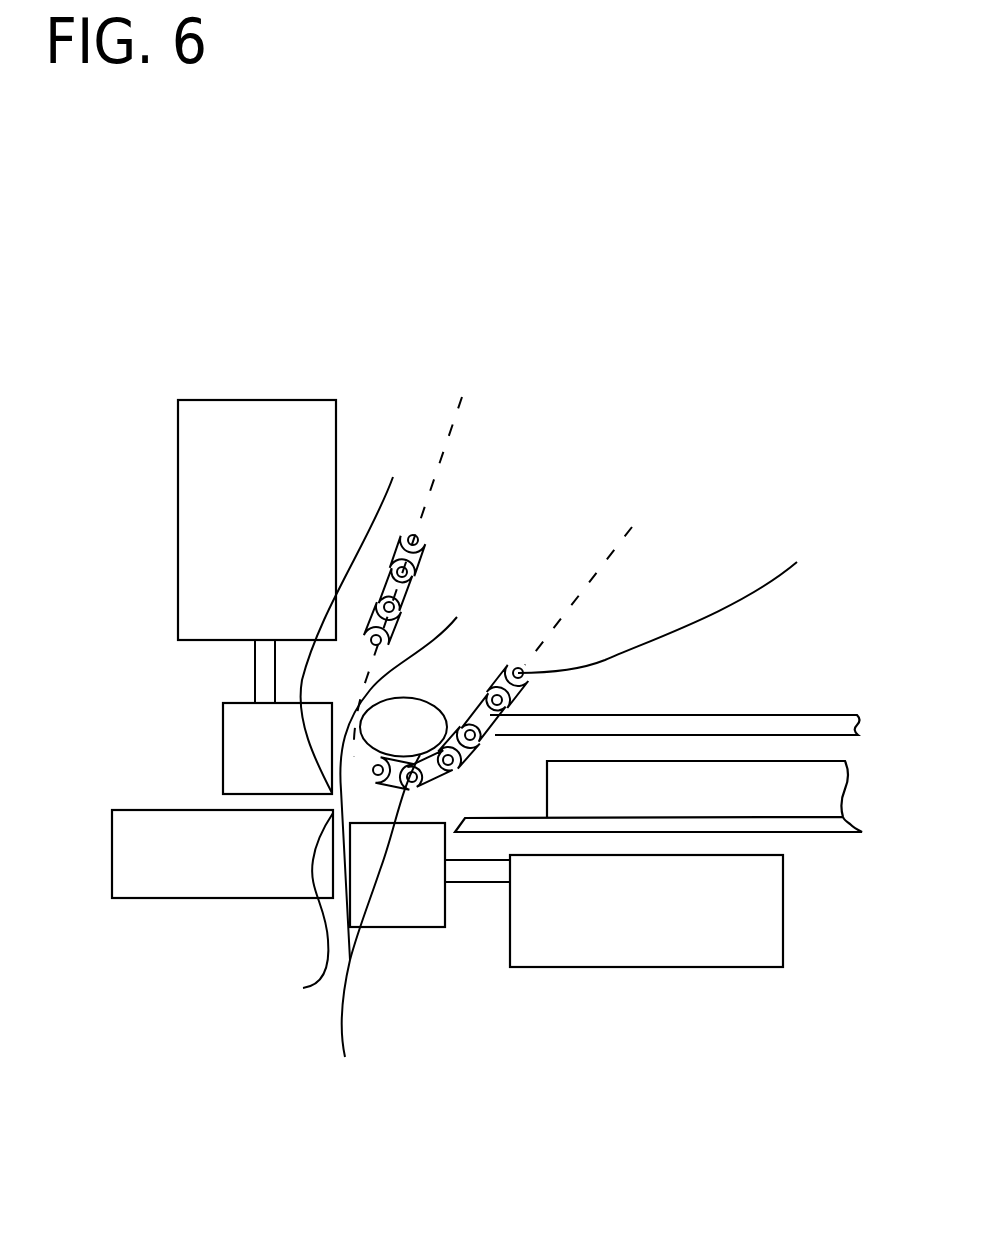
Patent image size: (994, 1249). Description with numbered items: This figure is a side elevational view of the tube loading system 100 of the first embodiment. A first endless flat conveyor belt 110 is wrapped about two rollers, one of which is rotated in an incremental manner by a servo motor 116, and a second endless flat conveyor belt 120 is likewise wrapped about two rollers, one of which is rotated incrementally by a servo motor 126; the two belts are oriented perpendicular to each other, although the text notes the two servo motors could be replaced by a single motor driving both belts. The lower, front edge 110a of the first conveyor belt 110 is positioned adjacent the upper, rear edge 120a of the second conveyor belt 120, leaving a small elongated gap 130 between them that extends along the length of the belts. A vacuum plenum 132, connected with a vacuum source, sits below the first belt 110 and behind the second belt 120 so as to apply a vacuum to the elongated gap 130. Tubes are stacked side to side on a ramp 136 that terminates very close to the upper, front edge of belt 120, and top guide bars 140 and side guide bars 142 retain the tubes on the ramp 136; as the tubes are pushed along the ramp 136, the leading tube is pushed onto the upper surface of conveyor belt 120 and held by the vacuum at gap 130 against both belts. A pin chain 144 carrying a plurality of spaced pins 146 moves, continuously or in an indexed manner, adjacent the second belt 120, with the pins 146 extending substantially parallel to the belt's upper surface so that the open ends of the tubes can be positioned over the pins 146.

The tube loading system 100 is at (330, 333).
The first endless flat conveyor belt 110 is at (245, 746).
The lower, front edge of conveyor belt 110a is at (381, 595).
The servo motor 116 is at (242, 400).
The second endless flat conveyor belt 120 is at (405, 903).
The upper, rear edge of conveyor belt 120a is at (418, 770).
The servo motor 126 is at (687, 967).
The elongated gap 130 is at (295, 909).
The vacuum plenum 132 is at (165, 898).
The ramp 136 is at (802, 833).
The top guide bars 140 is at (695, 714).
The side guide bars 142 is at (807, 785).
The pin chain 144 is at (603, 577).
The pins 146 is at (572, 810).